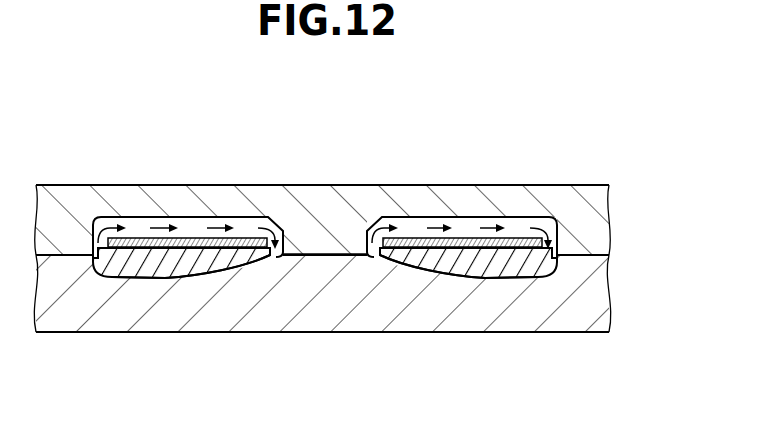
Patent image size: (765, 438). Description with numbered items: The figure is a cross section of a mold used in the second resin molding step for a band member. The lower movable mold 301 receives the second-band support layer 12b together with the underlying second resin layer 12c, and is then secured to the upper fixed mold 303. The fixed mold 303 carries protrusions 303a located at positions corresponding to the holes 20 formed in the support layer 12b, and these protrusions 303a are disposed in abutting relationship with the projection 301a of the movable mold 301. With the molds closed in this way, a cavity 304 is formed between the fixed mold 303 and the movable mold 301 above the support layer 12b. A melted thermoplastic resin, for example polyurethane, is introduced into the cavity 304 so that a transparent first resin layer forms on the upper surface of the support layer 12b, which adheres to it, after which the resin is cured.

The support layer 12b is at (190, 240).
The second resin layer 12c is at (177, 258).
The holes 20 is at (260, 265).
The movable mold 301 is at (519, 346).
The projection 301a is at (316, 258).
The fixed mold 303 is at (304, 173).
The protrusions 303a is at (339, 249).
The cavity 304 is at (138, 232).